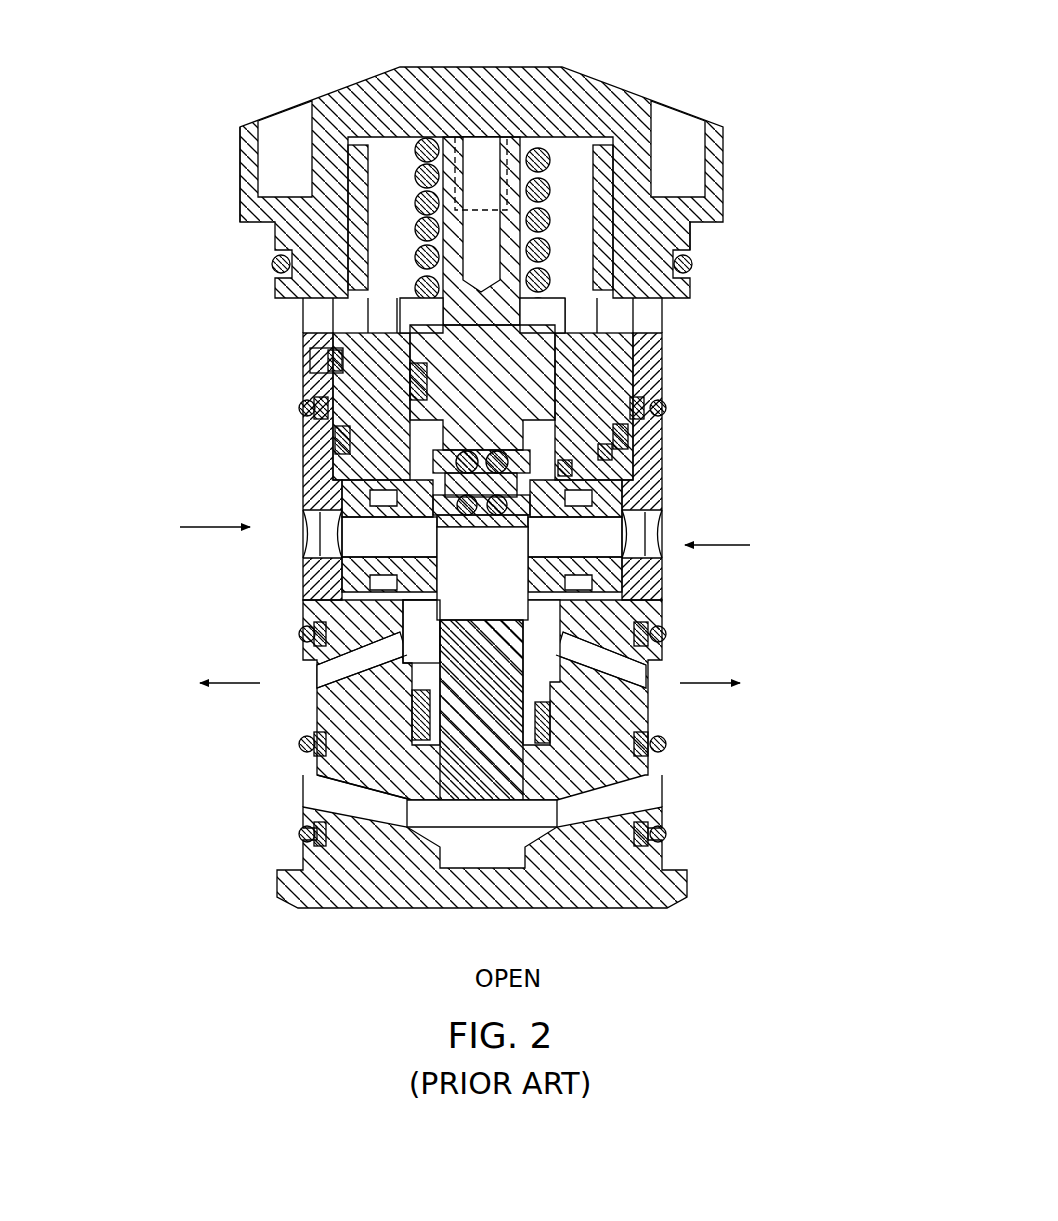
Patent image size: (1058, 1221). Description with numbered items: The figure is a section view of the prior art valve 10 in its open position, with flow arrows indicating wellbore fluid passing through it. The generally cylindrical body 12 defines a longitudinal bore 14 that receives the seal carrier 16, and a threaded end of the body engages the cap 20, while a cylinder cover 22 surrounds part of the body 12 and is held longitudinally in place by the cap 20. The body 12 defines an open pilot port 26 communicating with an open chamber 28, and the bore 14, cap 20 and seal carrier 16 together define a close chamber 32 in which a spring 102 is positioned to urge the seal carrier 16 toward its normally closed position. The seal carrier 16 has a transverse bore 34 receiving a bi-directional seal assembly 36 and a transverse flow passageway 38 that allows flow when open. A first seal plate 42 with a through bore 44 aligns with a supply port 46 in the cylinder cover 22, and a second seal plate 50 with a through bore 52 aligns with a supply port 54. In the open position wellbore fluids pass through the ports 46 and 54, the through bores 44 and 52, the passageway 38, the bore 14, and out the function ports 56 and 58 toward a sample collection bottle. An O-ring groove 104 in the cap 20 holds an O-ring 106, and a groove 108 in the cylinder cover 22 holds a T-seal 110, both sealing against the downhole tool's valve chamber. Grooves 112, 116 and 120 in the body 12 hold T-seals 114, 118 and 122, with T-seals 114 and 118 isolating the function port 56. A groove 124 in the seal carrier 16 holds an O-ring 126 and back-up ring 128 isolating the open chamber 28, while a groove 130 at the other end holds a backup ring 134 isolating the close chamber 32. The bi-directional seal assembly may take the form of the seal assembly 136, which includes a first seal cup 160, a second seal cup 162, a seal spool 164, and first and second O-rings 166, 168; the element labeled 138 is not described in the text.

The valve 10 is at (317, 62).
The body 12 is at (598, 905).
The longitudinal bore 14 is at (555, 608).
The seal carrier 16 is at (513, 142).
The cap 20 is at (400, 68).
The cylinder cover 22 is at (663, 346).
The open pilot port 26 is at (628, 790).
The open chamber 28 is at (420, 782).
The close chamber 32 is at (547, 150).
The transverse bore 34 is at (503, 518).
The bi-directional seal assembly 36 is at (474, 434).
The transverse flow passageway 38 is at (478, 618).
The first seal plate 42 is at (346, 582).
The through bore 44 is at (310, 520).
The supply port 46 is at (308, 548).
The second seal plate 50 is at (612, 578).
The through bore 52 is at (595, 556).
The supply port 54 is at (648, 520).
The function port 56 is at (326, 700).
The function port 58 is at (626, 684).
The spring 102 is at (430, 142).
The O-ring groove 104 is at (672, 244).
The O-ring 106 is at (692, 265).
The groove 108 is at (634, 392).
The T-seal 110 is at (662, 408).
The groove 112 is at (650, 608).
The T-seal 114 is at (664, 634).
The groove 116 is at (655, 720).
The T-seal 118 is at (664, 744).
The groove 120 is at (656, 814).
The T-seal 122 is at (664, 838).
The groove 124 is at (428, 700).
The O-ring 126 is at (417, 704).
The back-up ring 128 is at (420, 734).
The groove 130 is at (300, 408).
The backup ring 134 is at (408, 366).
The seal assembly 136 is at (408, 396).
The seal 138 is at (622, 437).
The first seal cup 160 is at (412, 497).
The second seal cup 162 is at (562, 464).
The seal spool 164 is at (478, 517).
The first O-ring 166 is at (340, 442).
The second O-ring 168 is at (493, 448).